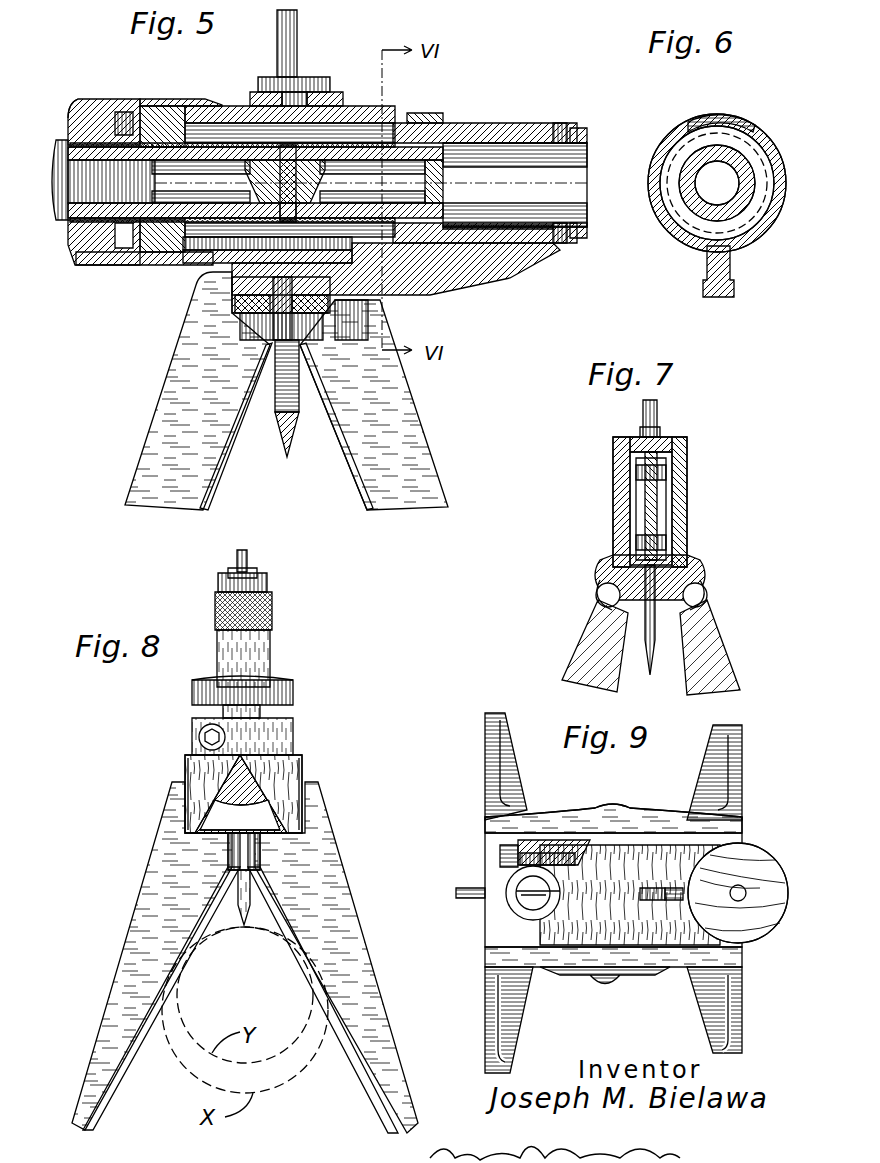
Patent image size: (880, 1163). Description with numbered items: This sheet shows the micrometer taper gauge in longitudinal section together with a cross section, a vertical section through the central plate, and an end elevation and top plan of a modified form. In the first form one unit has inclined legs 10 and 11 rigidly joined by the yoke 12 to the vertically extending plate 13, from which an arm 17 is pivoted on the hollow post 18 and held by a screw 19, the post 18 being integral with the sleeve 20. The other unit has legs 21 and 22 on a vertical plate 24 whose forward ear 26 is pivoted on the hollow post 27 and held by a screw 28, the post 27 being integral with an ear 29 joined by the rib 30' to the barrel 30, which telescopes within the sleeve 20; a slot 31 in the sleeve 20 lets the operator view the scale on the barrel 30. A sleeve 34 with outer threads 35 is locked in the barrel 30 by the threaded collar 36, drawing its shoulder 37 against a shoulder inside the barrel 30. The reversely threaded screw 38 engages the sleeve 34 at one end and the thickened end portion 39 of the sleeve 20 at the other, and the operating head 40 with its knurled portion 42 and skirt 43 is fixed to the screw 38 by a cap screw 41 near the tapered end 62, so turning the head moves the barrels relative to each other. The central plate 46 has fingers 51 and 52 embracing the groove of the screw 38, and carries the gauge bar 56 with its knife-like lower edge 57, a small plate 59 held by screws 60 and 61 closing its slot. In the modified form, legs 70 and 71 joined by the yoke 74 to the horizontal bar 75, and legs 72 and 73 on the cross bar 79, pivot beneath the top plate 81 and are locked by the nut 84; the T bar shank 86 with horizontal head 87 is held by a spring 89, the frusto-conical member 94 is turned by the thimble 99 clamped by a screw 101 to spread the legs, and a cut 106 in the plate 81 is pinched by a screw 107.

In FIG. 5, the inclined leg 10 is at (400, 428).
In FIG. 5, the inclined leg 11 is at (352, 492).
In FIG. 7, the inclined leg 11 is at (715, 638).
In FIG. 7, the yoke 12 is at (700, 578).
In FIG. 7, the vertically extending plate 13 is at (687, 490).
In FIG. 5, the arm 17 is at (335, 96).
In FIG. 5, the hollow post 18 is at (312, 78).
In FIG. 5, the screw 19 is at (298, 70).
In FIG. 5, the sleeve 20 is at (236, 106).
In FIG. 6, the sleeve 20 is at (782, 150).
In FIG. 5, the leg 21 is at (165, 428).
In FIG. 7, the leg 21 is at (590, 630).
In FIG. 5, the leg 22 is at (220, 490).
In FIG. 7, the vertical plate 24 is at (613, 480).
In FIG. 5, the ear 26 is at (236, 305).
In FIG. 5, the hollow post 27 is at (278, 318).
In FIG. 5, the screw 28 is at (252, 326).
In FIG. 5, the ear 29 is at (232, 286).
In FIG. 5, the barrel 30 is at (485, 161).
In FIG. 6, the barrel 30 is at (721, 106).
In FIG. 5, the rib 30' is at (396, 269).
In FIG. 6, the rib 30' is at (691, 271).
In FIG. 6, the slot 31 is at (755, 135).
In FIG. 5, the sleeve 34 is at (515, 225).
In FIG. 5, the threads 35 is at (582, 130).
In FIG. 5, the threaded collar 36 is at (560, 123).
In FIG. 5, the shoulder 37 is at (420, 113).
In FIG. 5, the screw 38 is at (440, 192).
In FIG. 6, the screw 38 is at (748, 186).
In FIG. 5, the thickened end portion 39 is at (160, 106).
In FIG. 5, the operating head 40 is at (66, 108).
In FIG. 5, the cap screw 41 is at (60, 222).
In FIG. 5, the knurled portion 42 is at (100, 99).
In FIG. 5, the skirt portion 43 is at (208, 99).
In FIG. 7, the vertically extending plate 46 is at (636, 505).
In FIG. 5, the finger 51 is at (320, 172).
In FIG. 5, the finger 52 is at (282, 212).
In FIG. 5, the gauge bar 56 is at (280, 432).
In FIG. 7, the gauge bar 56 is at (647, 660).
In FIG. 5, the lower edge 57 is at (287, 457).
In FIG. 7, the small plate 59 is at (660, 510).
In FIG. 7, the screw 60 is at (666, 475).
In FIG. 7, the screw 61 is at (666, 542).
In FIG. 5, the tapered end 62 is at (125, 258).
In FIG. 8, the leg 70 is at (378, 1000).
In FIG. 9, the leg 70 is at (510, 1040).
In FIG. 8, the leg 71 is at (366, 1088).
In FIG. 9, the leg 71 is at (742, 1005).
In FIG. 8, the leg 72 is at (120, 990).
In FIG. 9, the leg 72 is at (512, 735).
In FIG. 8, the leg 73 is at (118, 1075).
In FIG. 9, the leg 73 is at (742, 762).
In FIG. 9, the yoke 74 is at (592, 967).
In FIG. 8, the horizontal bar 75 is at (302, 768).
In FIG. 9, the horizontal bar 75 is at (642, 967).
In FIG. 8, the cross bar 79 is at (185, 768).
In FIG. 8, the top plate 81 is at (293, 728).
In FIG. 9, the top plate 81 is at (628, 838).
In FIG. 8, the nut 84 is at (293, 690).
In FIG. 9, the nut 84 is at (765, 860).
In FIG. 9, the shank 86 is at (655, 900).
In FIG. 8, the horizontal head 87 is at (250, 893).
In FIG. 9, the horizontal head 87 is at (470, 890).
In FIG. 9, the spring 89 is at (676, 887).
In FIG. 8, the frusto-conical member 94 is at (232, 812).
In FIG. 8, the thimble 99 is at (272, 612).
In FIG. 9, the screw 101 is at (526, 900).
In FIG. 9, the cut 106 is at (538, 840).
In FIG. 8, the screw 107 is at (199, 738).
In FIG. 9, the screw 107 is at (500, 852).